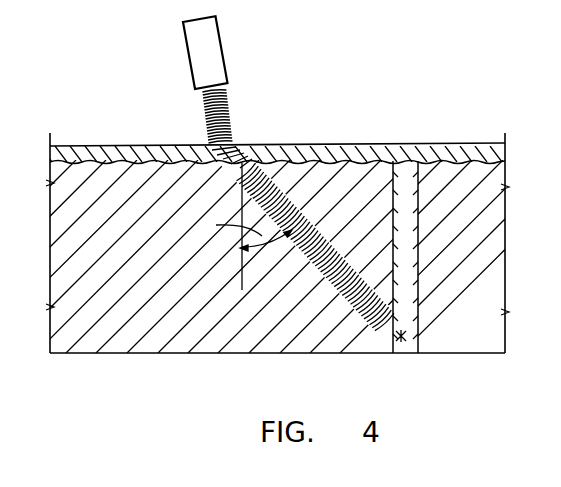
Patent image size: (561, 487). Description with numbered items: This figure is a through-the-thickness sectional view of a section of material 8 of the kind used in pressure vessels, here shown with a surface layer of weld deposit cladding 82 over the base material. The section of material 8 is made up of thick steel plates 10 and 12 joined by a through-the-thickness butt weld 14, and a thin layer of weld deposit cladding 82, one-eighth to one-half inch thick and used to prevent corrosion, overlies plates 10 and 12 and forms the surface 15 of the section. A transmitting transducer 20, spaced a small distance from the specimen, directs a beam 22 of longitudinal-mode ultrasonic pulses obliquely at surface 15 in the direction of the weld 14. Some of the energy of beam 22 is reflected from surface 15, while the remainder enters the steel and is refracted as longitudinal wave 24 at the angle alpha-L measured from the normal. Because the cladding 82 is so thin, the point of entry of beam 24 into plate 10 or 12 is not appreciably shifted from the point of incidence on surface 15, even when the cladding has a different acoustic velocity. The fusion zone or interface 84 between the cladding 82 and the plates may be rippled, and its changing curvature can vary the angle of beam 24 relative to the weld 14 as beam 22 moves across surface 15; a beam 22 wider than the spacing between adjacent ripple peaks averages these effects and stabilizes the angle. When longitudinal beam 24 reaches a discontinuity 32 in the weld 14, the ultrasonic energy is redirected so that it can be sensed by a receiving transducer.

The section of material 8 is at (416, 105).
The steel plate 10 is at (96, 259).
The steel plate 12 is at (489, 252).
The butt weld 14 is at (418, 214).
The surface 15 is at (445, 143).
The transmitting transducer 20 is at (212, 46).
The beam of ultrasonic pulses 22 is at (232, 113).
The longitudinal wave 24 is at (294, 201).
The discontinuity 32 is at (401, 336).
The weld deposit cladding 82 is at (314, 152).
The interface 84 is at (108, 160).